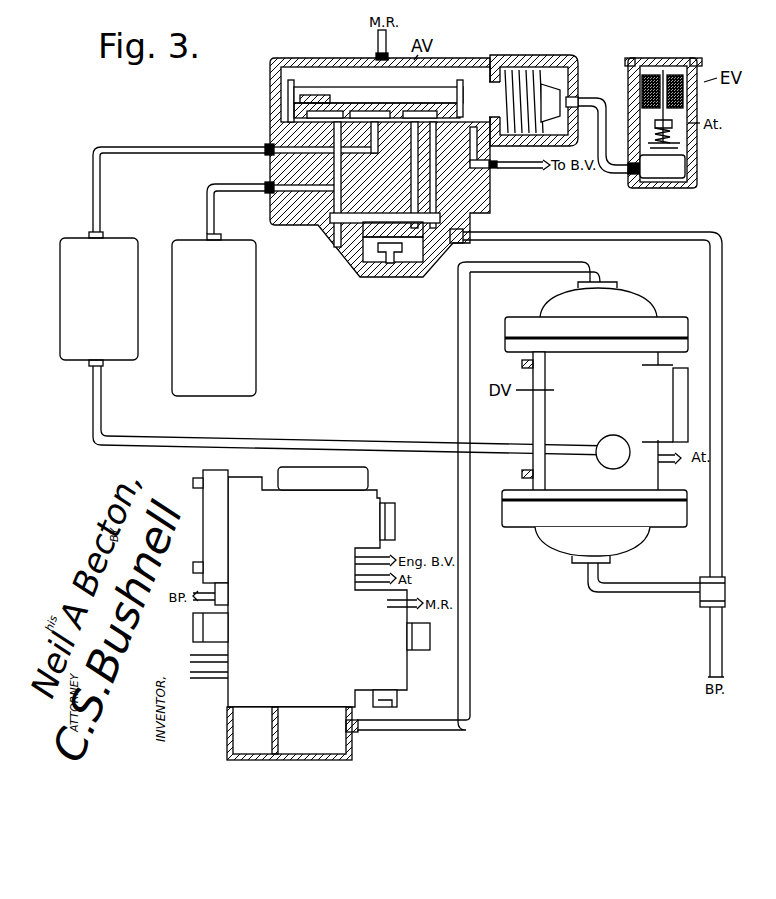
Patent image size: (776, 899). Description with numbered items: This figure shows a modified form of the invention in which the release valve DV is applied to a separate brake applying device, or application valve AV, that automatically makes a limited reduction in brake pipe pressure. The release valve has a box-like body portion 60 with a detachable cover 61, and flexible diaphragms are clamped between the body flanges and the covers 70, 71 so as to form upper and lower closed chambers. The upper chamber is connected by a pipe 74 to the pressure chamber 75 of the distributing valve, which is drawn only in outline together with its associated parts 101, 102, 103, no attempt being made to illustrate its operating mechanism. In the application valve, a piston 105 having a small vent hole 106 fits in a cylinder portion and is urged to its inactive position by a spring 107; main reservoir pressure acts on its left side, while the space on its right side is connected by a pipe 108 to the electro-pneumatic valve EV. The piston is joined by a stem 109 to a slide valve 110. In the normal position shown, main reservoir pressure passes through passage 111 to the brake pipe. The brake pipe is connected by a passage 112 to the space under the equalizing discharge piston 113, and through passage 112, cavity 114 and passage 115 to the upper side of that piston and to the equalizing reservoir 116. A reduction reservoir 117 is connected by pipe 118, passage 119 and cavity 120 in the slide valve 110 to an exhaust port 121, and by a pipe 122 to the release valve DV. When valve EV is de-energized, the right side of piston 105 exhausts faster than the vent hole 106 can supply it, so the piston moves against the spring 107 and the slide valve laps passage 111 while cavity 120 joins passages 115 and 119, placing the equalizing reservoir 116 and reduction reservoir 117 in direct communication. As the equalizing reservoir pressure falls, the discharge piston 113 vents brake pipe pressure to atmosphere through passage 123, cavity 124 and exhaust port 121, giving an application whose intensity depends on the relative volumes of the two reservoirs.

The body portion 60 is at (645, 480).
The detachable cover 61 is at (535, 427).
The cover 70 is at (633, 300).
The cover 71 is at (557, 540).
The pipe 74 is at (462, 645).
The pressure chamber 75 is at (336, 750).
The brake valve casing 101 is at (238, 742).
The brake valve portion 102 is at (398, 652).
The brake valve portion 103 is at (364, 506).
The piston 105 is at (491, 70).
The vent hole 106 is at (492, 93).
The spring 107 is at (530, 78).
The pipe 108 is at (634, 83).
The stem 109 is at (430, 95).
The slide valve 110 is at (318, 100).
The passage 111 is at (486, 170).
The passage 112 is at (435, 247).
The equalizing discharge piston 113 is at (382, 248).
The cavity 114 is at (420, 108).
The passage 115 is at (291, 190).
The equalizing reservoir 116 is at (245, 350).
The reduction reservoir 117 is at (125, 348).
The pipe 118 is at (160, 148).
The passage 119 is at (266, 162).
The cavity 120 is at (372, 108).
The exhaust port 121 is at (270, 125).
The pipe 122 is at (318, 440).
The passage 123 is at (352, 245).
The cavity 124 is at (290, 82).